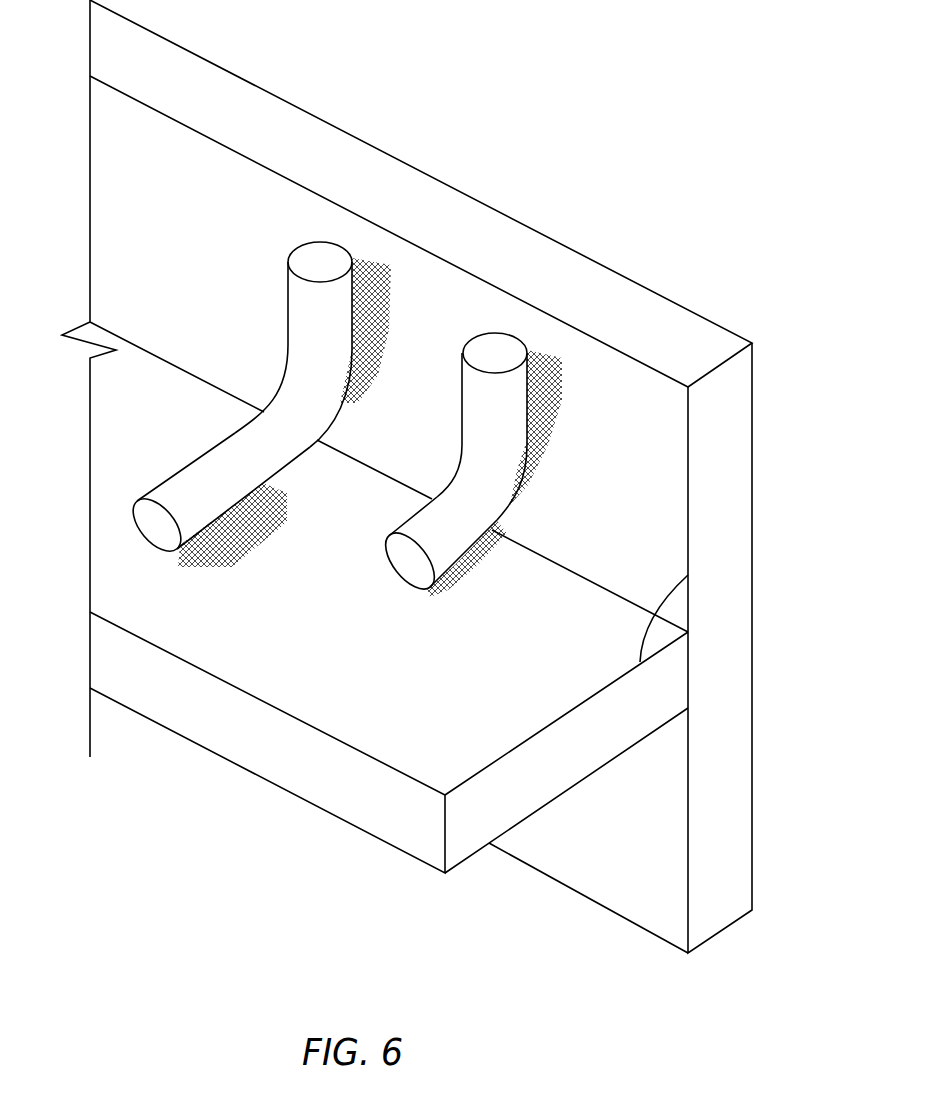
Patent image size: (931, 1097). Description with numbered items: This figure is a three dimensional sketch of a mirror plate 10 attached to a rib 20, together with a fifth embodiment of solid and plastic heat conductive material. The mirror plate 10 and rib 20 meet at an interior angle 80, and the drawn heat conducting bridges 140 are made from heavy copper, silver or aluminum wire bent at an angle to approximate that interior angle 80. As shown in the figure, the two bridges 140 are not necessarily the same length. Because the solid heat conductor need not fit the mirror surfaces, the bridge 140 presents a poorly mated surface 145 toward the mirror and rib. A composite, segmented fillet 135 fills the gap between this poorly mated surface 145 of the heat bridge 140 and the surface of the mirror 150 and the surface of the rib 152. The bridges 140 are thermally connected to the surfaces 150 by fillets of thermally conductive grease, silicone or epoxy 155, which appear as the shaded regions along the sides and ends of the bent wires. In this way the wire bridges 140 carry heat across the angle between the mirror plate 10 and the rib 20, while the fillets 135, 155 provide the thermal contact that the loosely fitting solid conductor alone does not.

The mirror plate 10 is at (735, 827).
The rib 20 is at (520, 797).
The interior angle 80 is at (677, 598).
The composite segmented fillet 135 is at (264, 368).
The heat conducting bridge 140 is at (287, 409).
The poorly mated surface 145 is at (192, 522).
The surface of the mirror 150 is at (486, 490).
The surface of the rib 152 is at (310, 523).
The fillet of thermally conductive grease, silicone or epoxy 155 is at (560, 396).